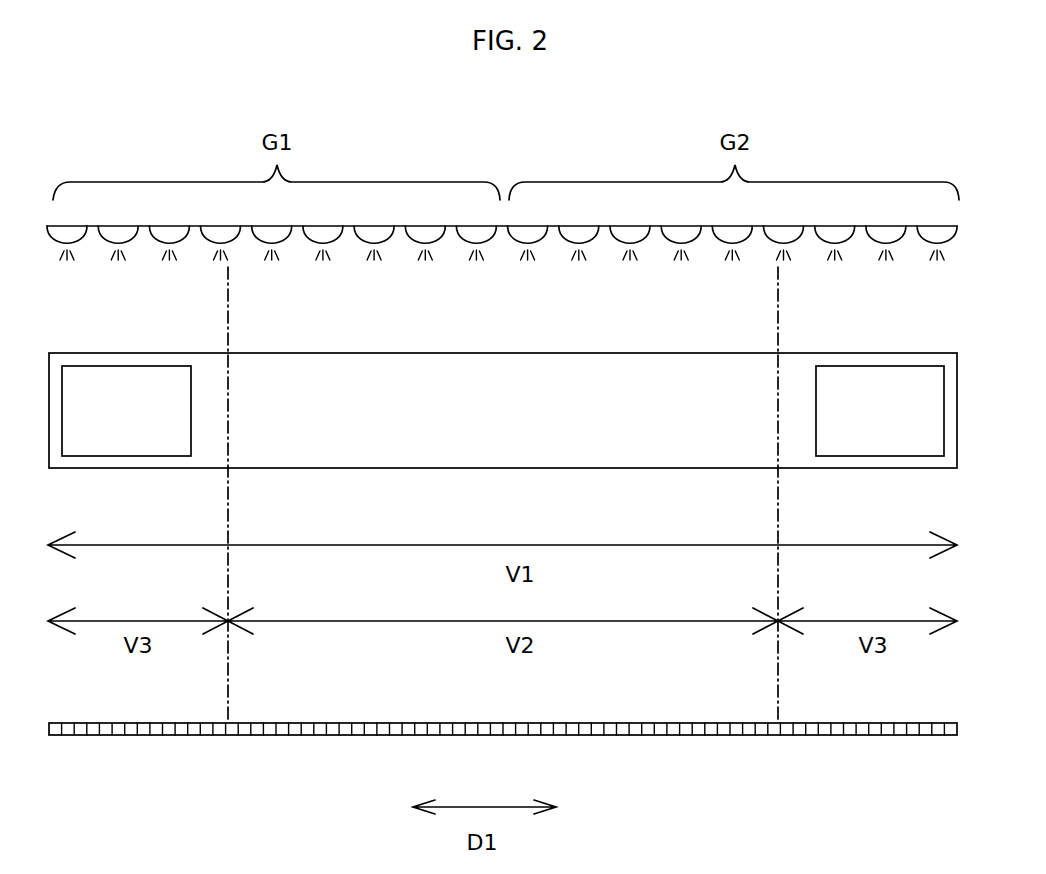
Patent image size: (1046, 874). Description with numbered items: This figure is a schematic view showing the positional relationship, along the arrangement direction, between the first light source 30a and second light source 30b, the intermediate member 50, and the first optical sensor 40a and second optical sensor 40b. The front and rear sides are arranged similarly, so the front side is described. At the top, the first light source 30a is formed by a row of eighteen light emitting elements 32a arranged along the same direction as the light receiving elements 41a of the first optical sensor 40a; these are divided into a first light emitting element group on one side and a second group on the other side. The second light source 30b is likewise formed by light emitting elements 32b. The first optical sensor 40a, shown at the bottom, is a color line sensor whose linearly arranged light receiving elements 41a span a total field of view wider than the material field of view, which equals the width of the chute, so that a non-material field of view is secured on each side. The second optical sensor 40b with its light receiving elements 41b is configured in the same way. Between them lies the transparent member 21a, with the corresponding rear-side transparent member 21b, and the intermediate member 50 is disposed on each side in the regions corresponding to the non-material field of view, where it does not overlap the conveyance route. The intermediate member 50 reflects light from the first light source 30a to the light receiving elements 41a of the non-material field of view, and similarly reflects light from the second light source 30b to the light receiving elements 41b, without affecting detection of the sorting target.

The transparent member 21a is at (503, 436).
The transparent member 21b is at (512, 417).
The first light source 30a is at (502, 282).
The second light source 30b is at (502, 282).
The light emitting elements 32a is at (502, 278).
The light emitting elements 32b is at (73, 235).
The first optical sensor 40a is at (501, 772).
The second optical sensor 40b is at (501, 772).
The light receiving elements 41a is at (494, 770).
The light receiving elements 41b is at (52, 735).
The intermediate member 50 is at (877, 493).